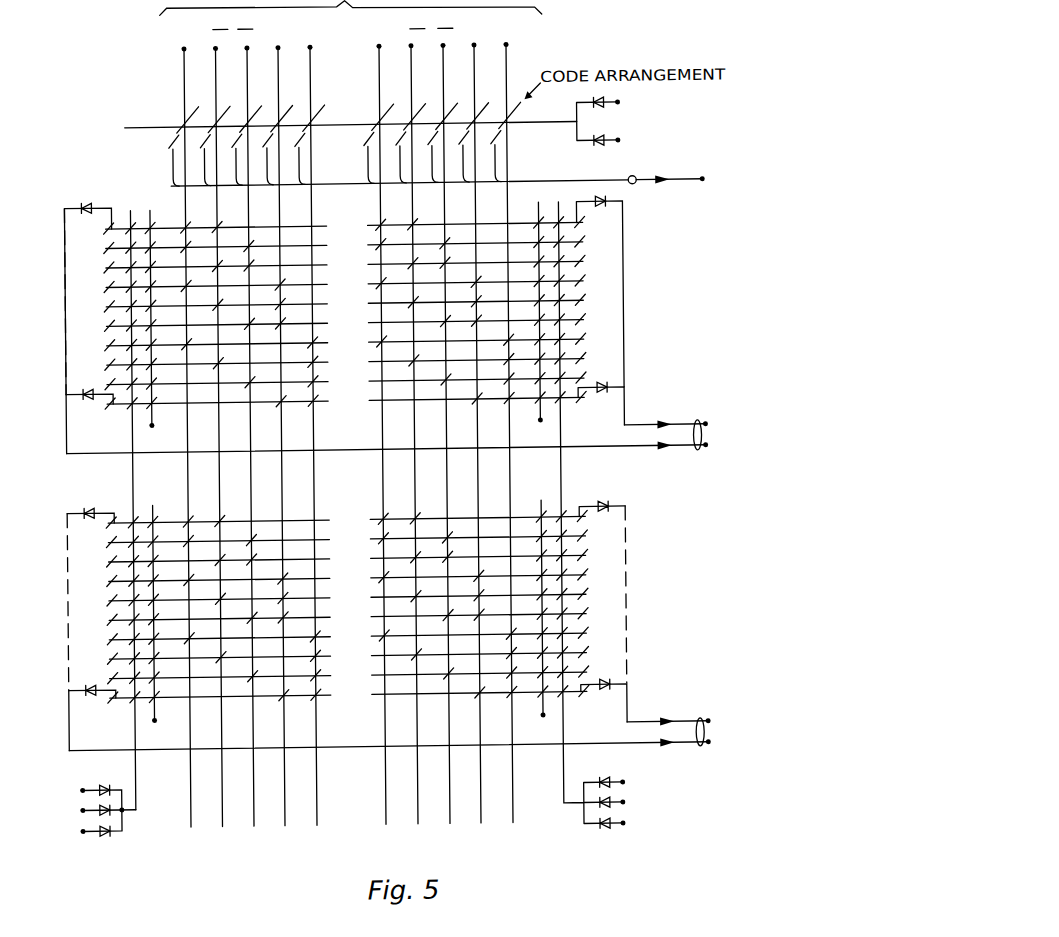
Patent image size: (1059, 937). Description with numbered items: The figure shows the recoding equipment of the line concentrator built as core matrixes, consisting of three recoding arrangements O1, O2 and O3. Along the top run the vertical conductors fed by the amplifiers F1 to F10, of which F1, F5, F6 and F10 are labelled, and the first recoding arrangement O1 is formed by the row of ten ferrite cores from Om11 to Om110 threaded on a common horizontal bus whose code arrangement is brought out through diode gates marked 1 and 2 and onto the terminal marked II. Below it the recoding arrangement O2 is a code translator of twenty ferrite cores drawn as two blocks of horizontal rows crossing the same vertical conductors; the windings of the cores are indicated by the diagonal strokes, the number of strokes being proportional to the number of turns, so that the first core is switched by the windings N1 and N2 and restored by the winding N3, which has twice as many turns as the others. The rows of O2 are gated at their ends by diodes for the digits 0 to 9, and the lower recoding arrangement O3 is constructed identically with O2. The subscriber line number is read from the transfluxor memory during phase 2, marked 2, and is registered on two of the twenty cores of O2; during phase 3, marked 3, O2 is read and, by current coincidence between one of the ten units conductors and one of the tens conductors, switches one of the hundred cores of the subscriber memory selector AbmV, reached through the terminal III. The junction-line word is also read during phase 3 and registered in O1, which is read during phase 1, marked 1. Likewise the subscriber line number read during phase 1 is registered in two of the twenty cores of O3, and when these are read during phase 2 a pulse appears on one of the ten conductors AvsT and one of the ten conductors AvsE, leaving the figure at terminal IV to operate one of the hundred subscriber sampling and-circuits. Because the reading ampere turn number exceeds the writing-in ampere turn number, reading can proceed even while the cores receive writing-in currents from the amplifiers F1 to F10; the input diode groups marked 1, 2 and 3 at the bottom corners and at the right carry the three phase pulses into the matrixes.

The amplifier F1 is at (187, 425).
The amplifier F5 is at (312, 423).
The amplifier F6 is at (379, 422).
The amplifier F10 is at (507, 421).
The ferrite core Om11 is at (181, 122).
The ferrite core Om110 is at (510, 132).
The recoding arrangement O1 is at (350, 108).
The connection terminal II is at (438, 170).
The winding N1 is at (218, 228).
The winding N2 is at (183, 228).
The winding N3 is at (148, 226).
The recoding arrangement O2 is at (344, 317).
The recoding arrangement O3 is at (347, 611).
The digit 0 gate 0 is at (345, 443).
The digit 9 gate 9 is at (346, 566).
The phase 1 pulse 1 is at (355, 464).
The phase 2 pulse 2 is at (356, 478).
The phase 3 pulse 3 is at (356, 523).
The subscriber memory selector AbmV is at (385, 429).
The connection terminal III is at (708, 435).
The tens conductors AvsT is at (667, 711).
The units conductors AvsE is at (388, 760).
The connection terminal IV is at (695, 755).